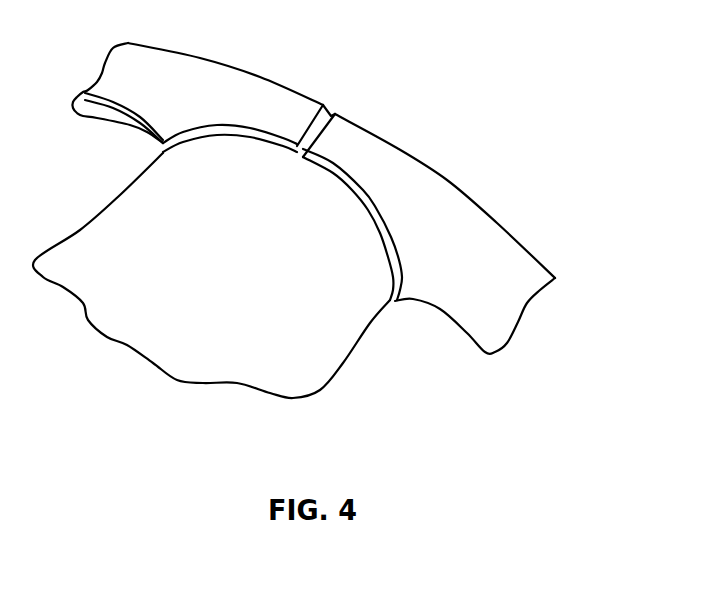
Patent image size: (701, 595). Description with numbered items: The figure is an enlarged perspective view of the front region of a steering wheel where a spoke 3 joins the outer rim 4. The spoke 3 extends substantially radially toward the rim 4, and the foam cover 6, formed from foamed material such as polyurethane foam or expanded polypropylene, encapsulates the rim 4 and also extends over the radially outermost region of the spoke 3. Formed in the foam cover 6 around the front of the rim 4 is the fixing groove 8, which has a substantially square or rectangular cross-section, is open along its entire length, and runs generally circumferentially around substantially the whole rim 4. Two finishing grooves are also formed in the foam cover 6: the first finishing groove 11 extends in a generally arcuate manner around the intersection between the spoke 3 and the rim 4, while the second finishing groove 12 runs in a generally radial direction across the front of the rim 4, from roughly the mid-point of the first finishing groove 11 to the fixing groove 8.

The spoke 3 is at (182, 367).
The rim 4 is at (445, 188).
The foam cover 6 is at (303, 368).
The fixing groove 8 is at (524, 235).
The first finishing groove 11 is at (390, 290).
The second finishing groove 12 is at (304, 128).